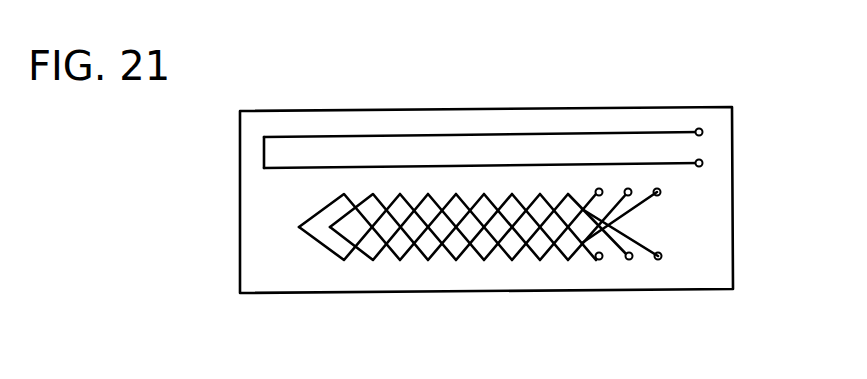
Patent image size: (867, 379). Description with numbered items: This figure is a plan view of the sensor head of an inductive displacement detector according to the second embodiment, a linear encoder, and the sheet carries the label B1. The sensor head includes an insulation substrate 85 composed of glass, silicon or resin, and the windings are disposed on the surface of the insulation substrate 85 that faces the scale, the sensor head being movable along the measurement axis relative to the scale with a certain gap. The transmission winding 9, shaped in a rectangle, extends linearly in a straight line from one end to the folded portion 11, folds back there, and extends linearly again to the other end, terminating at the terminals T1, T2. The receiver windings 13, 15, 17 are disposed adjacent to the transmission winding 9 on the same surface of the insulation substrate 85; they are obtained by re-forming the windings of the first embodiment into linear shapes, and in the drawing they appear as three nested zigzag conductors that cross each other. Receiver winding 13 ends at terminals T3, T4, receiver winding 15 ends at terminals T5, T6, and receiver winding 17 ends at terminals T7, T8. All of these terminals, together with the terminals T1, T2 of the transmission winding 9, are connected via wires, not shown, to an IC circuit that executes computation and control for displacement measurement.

The substrate / sensor element B1 is at (762, 36).
The insulation substrate 85 is at (733, 237).
The transmission winding 9 is at (445, 135).
The folded portion 11 is at (262, 155).
The receiver winding 13 is at (328, 257).
The receiver winding 15 is at (370, 257).
The receiver winding 17 is at (395, 255).
The terminal T1 is at (703, 133).
The terminal T2 is at (703, 163).
The terminal T3 is at (598, 188).
The terminal T4 is at (598, 260).
The terminal T5 is at (628, 188).
The terminal T6 is at (629, 260).
The terminal T7 is at (658, 188).
The terminal T8 is at (659, 260).